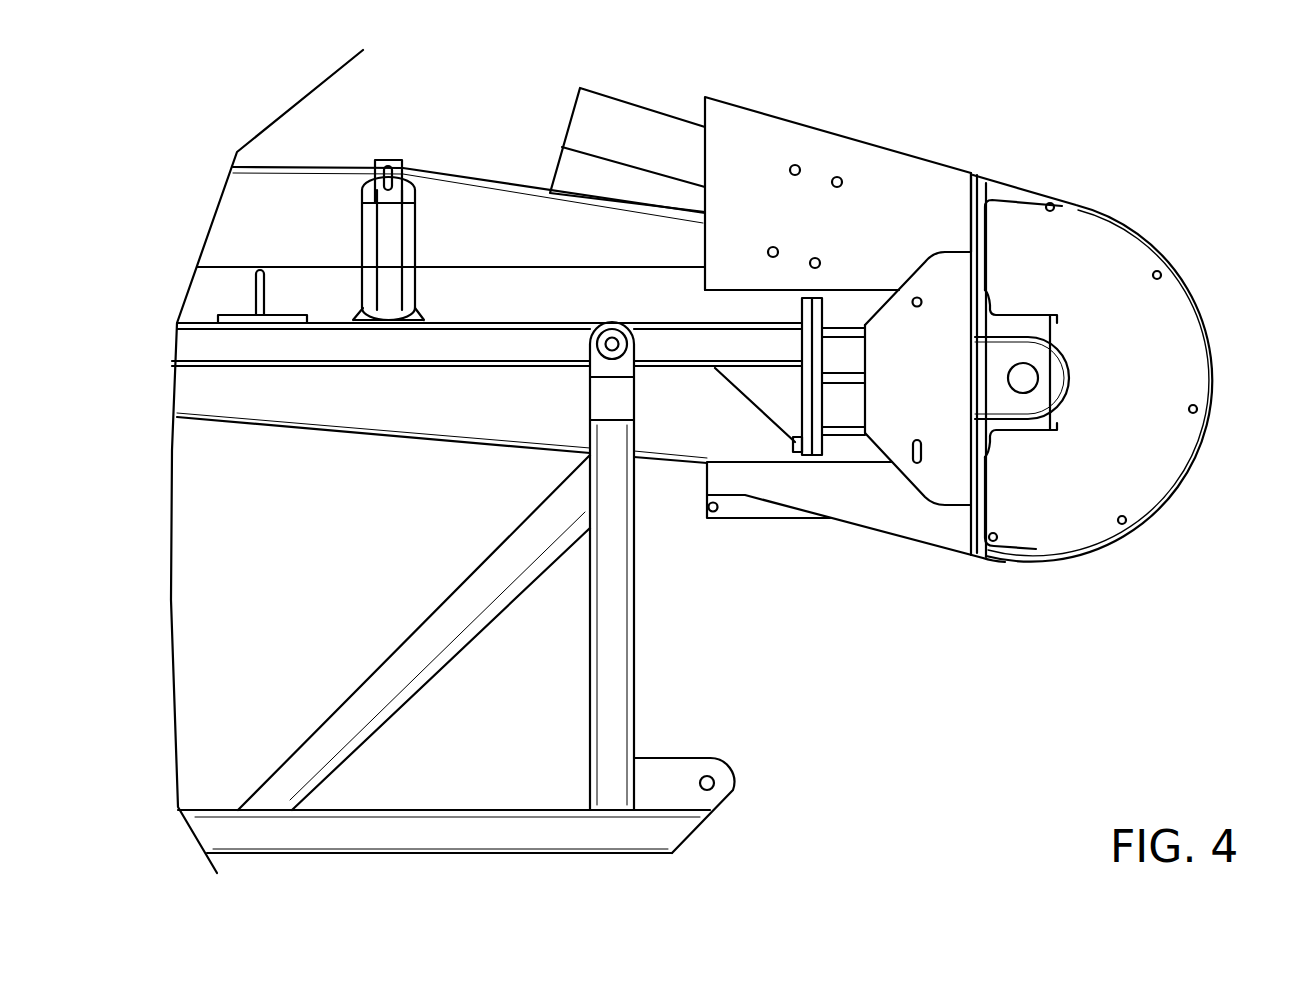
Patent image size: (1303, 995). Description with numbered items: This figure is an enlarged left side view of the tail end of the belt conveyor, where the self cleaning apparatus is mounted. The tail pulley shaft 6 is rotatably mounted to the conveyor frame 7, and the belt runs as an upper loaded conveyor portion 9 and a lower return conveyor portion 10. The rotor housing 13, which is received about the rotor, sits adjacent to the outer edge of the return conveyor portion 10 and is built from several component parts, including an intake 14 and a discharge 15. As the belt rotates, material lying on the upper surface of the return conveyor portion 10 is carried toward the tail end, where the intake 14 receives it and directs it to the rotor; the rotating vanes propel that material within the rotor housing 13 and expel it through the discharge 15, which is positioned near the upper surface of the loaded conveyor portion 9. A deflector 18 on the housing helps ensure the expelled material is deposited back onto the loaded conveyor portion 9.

The tail pulley shaft 6 is at (1023, 383).
The conveyor frame 7 is at (397, 343).
The loaded conveyor portion 9 is at (448, 177).
The return conveyor portion 10 is at (488, 448).
The rotor housing 13 is at (1163, 415).
The intake 14 is at (735, 478).
The discharge 15 is at (728, 153).
The deflector 18 is at (617, 120).